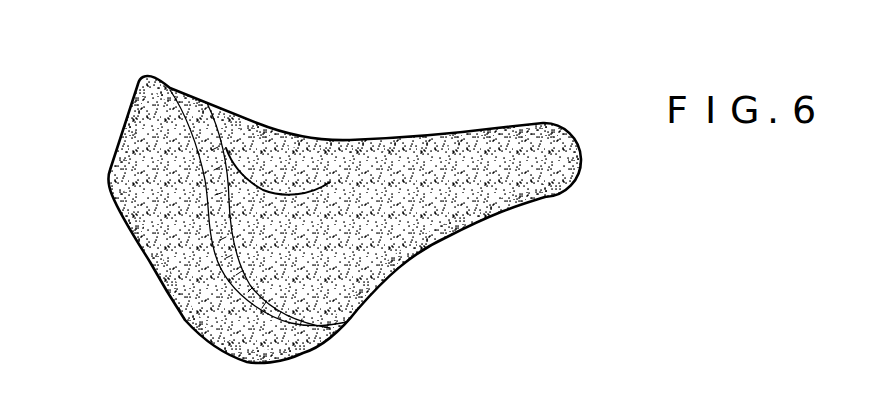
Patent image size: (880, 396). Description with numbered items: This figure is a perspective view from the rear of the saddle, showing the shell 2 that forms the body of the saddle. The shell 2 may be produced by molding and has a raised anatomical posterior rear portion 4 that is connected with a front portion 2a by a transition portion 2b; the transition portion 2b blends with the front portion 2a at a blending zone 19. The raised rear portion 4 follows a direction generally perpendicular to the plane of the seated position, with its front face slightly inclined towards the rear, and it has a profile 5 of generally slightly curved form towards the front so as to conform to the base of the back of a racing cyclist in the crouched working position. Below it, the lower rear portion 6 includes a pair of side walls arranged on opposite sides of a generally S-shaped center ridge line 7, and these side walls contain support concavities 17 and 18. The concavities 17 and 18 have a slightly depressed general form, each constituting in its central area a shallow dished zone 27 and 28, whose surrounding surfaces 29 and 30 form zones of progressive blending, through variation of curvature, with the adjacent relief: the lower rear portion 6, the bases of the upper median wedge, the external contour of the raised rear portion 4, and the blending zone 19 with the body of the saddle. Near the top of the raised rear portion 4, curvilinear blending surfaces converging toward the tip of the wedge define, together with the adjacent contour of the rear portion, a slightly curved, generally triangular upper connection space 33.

The shell 2 is at (323, 92).
The front portion 2a is at (512, 133).
The transition portion 2b is at (327, 183).
The raised anatomical posterior rear portion 4 is at (97, 80).
The profile 5 is at (145, 222).
The lower rear portion 6 is at (350, 163).
The center ridge line 7 is at (327, 183).
The concavity 17 is at (270, 172).
The concavity 18 is at (263, 233).
The blending zone 19 is at (385, 180).
The dished zone 27 is at (246, 146).
The dished zone 28 is at (303, 260).
The surrounding surface 29 is at (226, 110).
The surrounding surface 30 is at (300, 297).
The upper connection space 33 is at (215, 137).